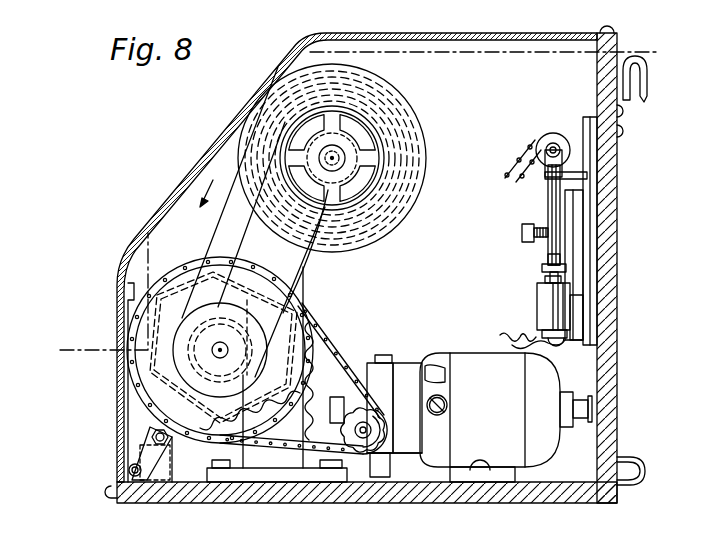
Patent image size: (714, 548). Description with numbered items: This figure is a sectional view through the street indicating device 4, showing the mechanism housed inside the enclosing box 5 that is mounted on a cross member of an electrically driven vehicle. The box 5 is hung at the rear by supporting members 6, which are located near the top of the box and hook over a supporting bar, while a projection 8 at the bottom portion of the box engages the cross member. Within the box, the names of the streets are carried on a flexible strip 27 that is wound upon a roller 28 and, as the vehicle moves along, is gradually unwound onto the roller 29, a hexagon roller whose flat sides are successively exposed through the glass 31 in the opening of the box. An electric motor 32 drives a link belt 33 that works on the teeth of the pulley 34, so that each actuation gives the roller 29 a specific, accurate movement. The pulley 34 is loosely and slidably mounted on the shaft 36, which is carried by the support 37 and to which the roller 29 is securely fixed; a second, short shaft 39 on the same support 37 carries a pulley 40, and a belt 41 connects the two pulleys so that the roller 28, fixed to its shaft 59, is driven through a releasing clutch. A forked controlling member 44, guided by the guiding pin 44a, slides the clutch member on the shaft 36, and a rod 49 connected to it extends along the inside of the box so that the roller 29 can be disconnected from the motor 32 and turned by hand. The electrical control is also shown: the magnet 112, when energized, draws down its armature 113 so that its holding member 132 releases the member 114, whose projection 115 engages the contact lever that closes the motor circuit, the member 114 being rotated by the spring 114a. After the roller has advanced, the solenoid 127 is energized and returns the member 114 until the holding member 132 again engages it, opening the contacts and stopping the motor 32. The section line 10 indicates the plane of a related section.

The street indicating device 4 is at (128, 240).
The enclosing box 5 is at (619, 353).
The supporting members 6 is at (648, 82).
The projections 8 is at (642, 466).
The section line 10 is at (667, 33).
The flexible strip 27 is at (225, 176).
The roller 28 is at (351, 155).
The roller 29 is at (304, 372).
The glass 31 is at (125, 315).
The electric motor 32 is at (462, 360).
The belt 33 is at (323, 337).
The pulley 34 is at (312, 356).
The shaft 36 is at (218, 352).
The support 37 is at (302, 267).
The shaft 39 is at (343, 158).
The pulley 40 is at (383, 168).
The belt 41 is at (227, 237).
The forked controlling member 44 is at (143, 450).
The guiding pin 44a is at (122, 474).
The rod 49 is at (150, 436).
The shaft 59 is at (343, 151).
The magnet 112 is at (544, 300).
The armature 113 is at (543, 269).
The member 114 is at (560, 228).
The spring 114a is at (522, 231).
The projection 115 is at (584, 222).
The solenoid 127 is at (549, 134).
The holding member 132 is at (547, 262).